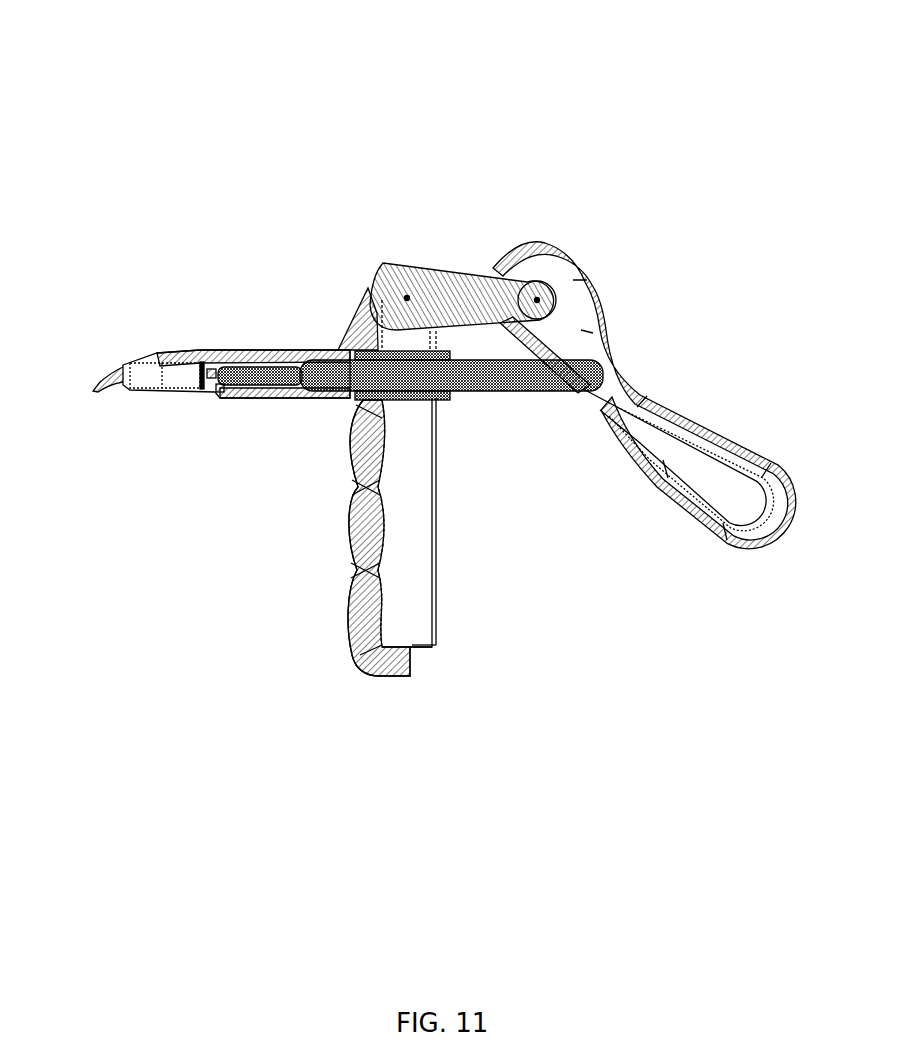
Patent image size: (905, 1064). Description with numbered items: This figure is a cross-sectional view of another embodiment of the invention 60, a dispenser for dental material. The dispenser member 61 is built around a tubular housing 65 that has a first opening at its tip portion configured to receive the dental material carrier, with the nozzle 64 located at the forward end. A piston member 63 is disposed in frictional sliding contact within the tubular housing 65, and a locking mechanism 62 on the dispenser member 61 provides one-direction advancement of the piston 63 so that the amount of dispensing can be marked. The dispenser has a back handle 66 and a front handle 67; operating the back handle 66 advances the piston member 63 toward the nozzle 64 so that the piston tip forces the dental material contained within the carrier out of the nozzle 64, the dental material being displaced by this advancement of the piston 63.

The another embodiment of the present invention 60 is at (672, 123).
The dispenser member 61 is at (467, 264).
The locking mechanism 62 is at (370, 394).
The piston member 63 is at (512, 388).
The nozzle 64 is at (111, 385).
The tubular housing 65 is at (212, 352).
The back handle 66 is at (723, 432).
The front handle 67 is at (362, 590).